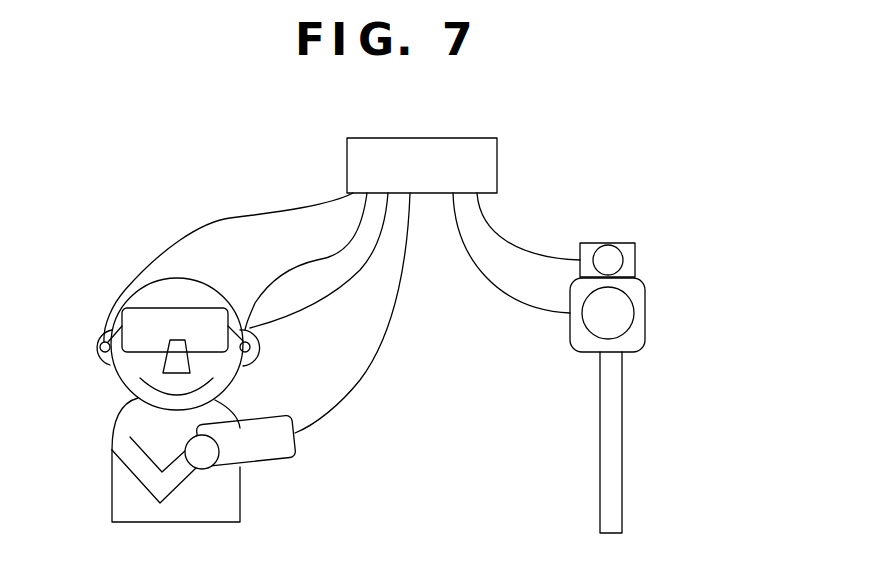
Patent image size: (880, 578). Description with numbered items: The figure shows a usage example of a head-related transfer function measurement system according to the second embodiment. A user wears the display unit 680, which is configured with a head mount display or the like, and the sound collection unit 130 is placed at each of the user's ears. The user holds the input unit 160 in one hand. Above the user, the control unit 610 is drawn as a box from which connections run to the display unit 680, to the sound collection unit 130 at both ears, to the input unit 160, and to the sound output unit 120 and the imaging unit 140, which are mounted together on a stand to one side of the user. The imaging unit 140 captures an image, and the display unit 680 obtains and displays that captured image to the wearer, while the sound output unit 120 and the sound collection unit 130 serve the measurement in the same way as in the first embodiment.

The control unit 610 is at (467, 138).
The display unit 680 is at (190, 307).
The sound collection unit 130 is at (93, 343).
The input unit 160 is at (277, 460).
The imaging unit 140 is at (622, 243).
The sound output unit 120 is at (645, 313).